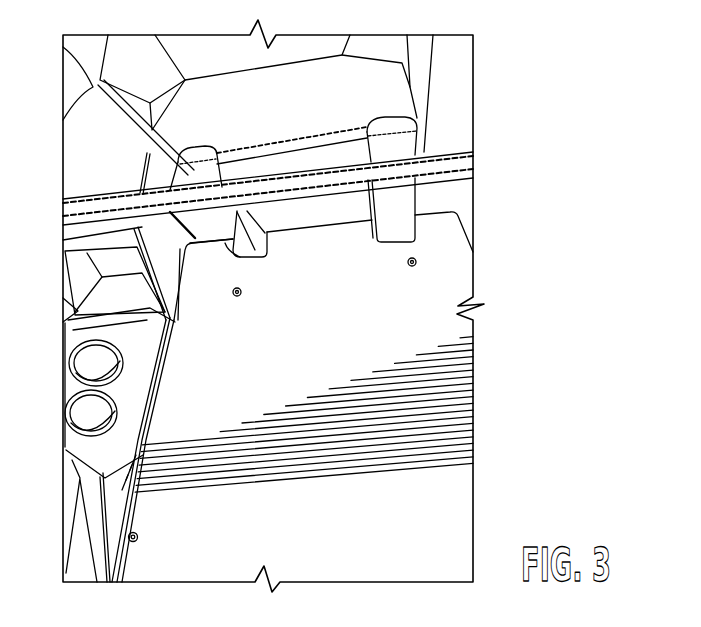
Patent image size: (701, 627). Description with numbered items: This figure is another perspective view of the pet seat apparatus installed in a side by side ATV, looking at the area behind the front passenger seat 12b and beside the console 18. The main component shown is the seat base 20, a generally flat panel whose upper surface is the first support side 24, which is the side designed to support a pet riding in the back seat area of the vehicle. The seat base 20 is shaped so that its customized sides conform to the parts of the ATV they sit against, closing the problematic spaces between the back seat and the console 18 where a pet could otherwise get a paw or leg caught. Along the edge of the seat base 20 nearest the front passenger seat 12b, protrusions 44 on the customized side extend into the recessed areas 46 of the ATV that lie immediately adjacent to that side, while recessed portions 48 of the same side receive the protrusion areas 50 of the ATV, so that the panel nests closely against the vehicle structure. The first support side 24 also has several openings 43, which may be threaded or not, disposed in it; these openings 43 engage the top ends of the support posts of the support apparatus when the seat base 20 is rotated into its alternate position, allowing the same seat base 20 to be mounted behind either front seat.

The front passenger seat 12b is at (363, 100).
The console 18 is at (127, 385).
The seat base 20 is at (455, 287).
The first support side 24 is at (334, 318).
The openings 43 is at (241, 290).
The protrusions 44 is at (293, 210).
The recessed areas 46 is at (334, 226).
The recessed portions 48 is at (227, 243).
The protrusion areas 50 is at (150, 222).